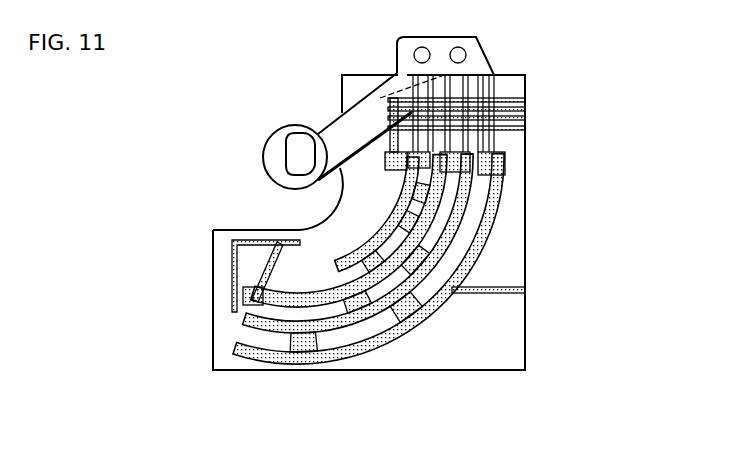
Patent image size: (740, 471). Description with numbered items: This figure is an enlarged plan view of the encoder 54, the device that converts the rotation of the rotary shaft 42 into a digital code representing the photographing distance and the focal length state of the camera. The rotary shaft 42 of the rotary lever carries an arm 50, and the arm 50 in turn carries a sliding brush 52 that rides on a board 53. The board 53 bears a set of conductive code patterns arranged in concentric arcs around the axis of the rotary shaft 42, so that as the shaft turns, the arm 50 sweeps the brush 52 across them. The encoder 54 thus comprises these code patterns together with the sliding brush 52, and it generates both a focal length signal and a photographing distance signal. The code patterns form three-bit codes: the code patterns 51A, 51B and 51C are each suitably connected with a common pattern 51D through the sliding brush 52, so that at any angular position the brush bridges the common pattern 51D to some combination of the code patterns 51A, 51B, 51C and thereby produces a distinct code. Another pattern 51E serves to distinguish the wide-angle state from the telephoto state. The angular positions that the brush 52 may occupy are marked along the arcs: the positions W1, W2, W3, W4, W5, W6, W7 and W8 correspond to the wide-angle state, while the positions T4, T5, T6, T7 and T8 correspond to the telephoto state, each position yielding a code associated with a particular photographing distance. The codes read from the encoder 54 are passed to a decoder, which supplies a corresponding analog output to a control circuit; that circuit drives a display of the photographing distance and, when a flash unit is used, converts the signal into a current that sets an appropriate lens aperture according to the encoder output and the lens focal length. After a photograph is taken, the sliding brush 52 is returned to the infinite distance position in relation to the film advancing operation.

The rotary shaft 42 is at (297, 155).
The arm 50 is at (352, 84).
The code pattern 51A is at (224, 340).
The code pattern 51B is at (280, 292).
The code pattern 51C is at (258, 257).
The common pattern 51D is at (227, 303).
The pattern 51E is at (458, 168).
The sliding brush 52 is at (483, 65).
The board 53 is at (338, 137).
The encoder 54 is at (545, 100).
The brush position T4 is at (447, 157).
The brush position T5 is at (395, 176).
The brush position T6 is at (392, 187).
The brush position T7 is at (389, 195).
The brush position T8 is at (385, 204).
The brush position W1 is at (401, 265).
The brush position W2 is at (342, 246).
The brush position W3 is at (322, 305).
The brush position W4 is at (294, 307).
The brush position W5 is at (285, 300).
The brush position W6 is at (267, 304).
The brush position W7 is at (258, 300).
The brush position W8 is at (244, 298).